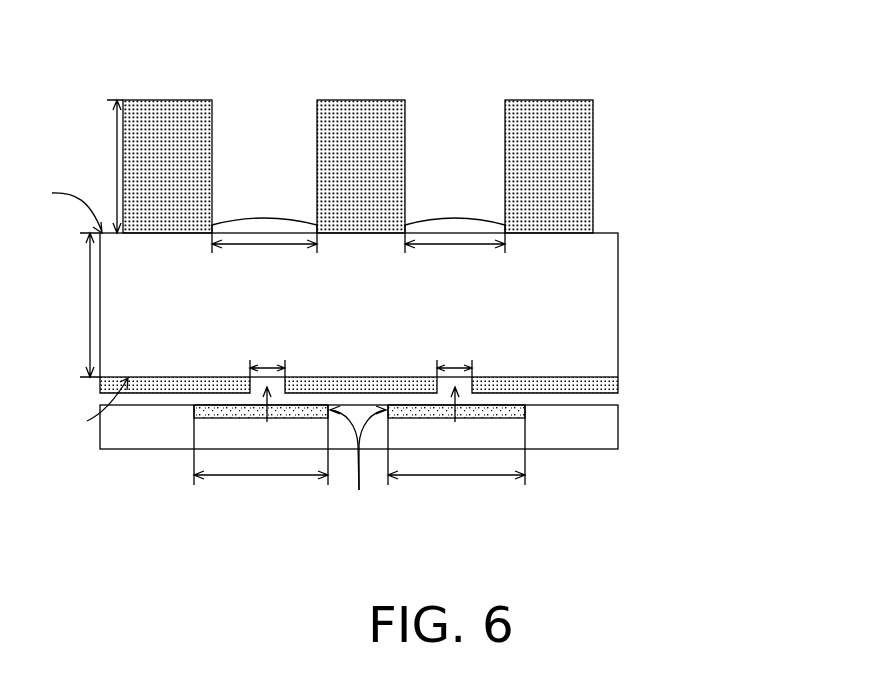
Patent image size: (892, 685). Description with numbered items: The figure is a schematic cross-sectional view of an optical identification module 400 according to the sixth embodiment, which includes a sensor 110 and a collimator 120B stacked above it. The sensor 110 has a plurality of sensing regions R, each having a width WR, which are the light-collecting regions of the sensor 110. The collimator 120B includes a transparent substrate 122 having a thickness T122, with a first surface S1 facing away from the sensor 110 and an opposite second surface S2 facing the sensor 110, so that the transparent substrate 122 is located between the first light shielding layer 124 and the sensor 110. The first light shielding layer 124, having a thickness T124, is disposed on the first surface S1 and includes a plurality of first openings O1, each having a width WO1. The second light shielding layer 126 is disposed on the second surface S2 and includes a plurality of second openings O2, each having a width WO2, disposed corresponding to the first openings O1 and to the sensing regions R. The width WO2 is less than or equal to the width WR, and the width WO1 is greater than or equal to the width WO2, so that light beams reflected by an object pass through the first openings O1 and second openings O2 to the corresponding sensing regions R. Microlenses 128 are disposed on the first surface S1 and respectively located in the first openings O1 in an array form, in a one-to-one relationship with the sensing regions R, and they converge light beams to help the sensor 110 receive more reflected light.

The optical identification module 400 is at (473, 342).
The collimator 120B is at (473, 246).
The microlenses 128 is at (470, 224).
The first light shielding layer 124 is at (597, 224).
The transparent substrate 122 is at (603, 293).
The second light shielding layer 126 is at (433, 355).
The sensor 110 is at (608, 426).
The first openings O1 is at (268, 127).
The width of first opening WO1 is at (358, 256).
The thickness of first light shielding layer T124 is at (87, 166).
The first surface S1 is at (63, 207).
The thickness of transparent substrate T122 is at (64, 305).
The width of second opening WO2 is at (361, 351).
The second surface S2 is at (93, 411).
The second openings O2 is at (359, 419).
The sensing regions R is at (358, 466).
The width of sensing region WR is at (272, 477).